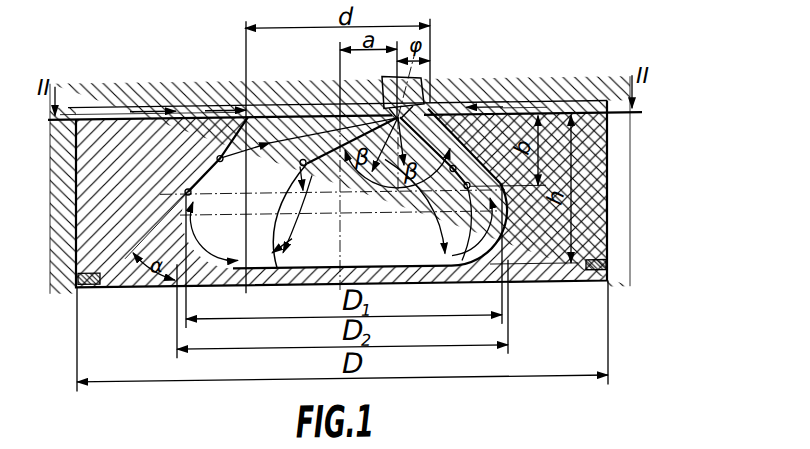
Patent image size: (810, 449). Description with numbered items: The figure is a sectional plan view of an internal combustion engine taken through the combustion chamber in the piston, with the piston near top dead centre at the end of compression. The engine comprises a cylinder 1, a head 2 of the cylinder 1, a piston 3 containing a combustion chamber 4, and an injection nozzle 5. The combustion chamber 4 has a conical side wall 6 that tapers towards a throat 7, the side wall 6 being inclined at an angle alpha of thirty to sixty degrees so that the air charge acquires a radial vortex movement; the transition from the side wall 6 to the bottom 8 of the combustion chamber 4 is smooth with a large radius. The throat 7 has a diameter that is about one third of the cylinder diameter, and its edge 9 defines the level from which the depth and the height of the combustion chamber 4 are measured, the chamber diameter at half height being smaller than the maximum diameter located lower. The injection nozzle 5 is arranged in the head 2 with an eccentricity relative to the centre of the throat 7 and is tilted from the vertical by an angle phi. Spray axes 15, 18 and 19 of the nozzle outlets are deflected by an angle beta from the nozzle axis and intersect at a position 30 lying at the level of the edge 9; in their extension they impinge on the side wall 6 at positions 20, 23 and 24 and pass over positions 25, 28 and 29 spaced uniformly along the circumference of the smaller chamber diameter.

The cylinder 1 is at (619, 291).
The head 2 is at (572, 90).
The piston 3 is at (537, 280).
The combustion chamber 4 is at (477, 268).
The injection nozzle 5 is at (432, 90).
The conical side wall 6 is at (446, 100).
The throat 7 is at (306, 114).
The bottom 8 is at (187, 287).
The edge 9 is at (240, 104).
The axis of fuel spray outlet 15 is at (472, 108).
The axis of fuel spray outlet 18 is at (291, 138).
The axis of fuel spray outlet 19 is at (340, 108).
The impingement position 20 is at (452, 135).
The impingement position 23 is at (212, 152).
The impingement position 24 is at (305, 166).
The position on diameter D1 circumference 25 is at (503, 212).
The position on diameter D1 circumference 28 is at (196, 228).
The position on diameter D1 circumference 29 is at (297, 214).
The intersection position 30 is at (385, 116).